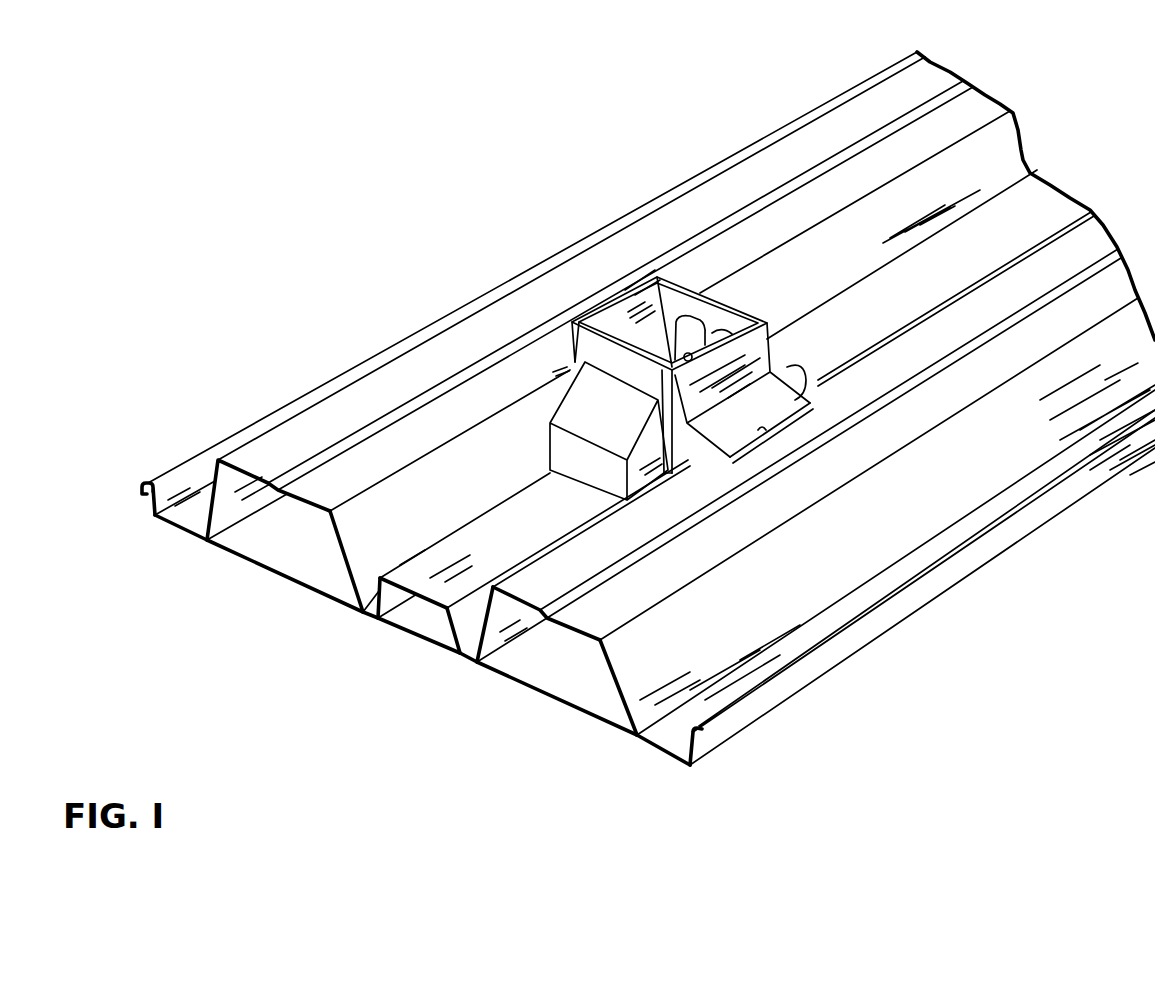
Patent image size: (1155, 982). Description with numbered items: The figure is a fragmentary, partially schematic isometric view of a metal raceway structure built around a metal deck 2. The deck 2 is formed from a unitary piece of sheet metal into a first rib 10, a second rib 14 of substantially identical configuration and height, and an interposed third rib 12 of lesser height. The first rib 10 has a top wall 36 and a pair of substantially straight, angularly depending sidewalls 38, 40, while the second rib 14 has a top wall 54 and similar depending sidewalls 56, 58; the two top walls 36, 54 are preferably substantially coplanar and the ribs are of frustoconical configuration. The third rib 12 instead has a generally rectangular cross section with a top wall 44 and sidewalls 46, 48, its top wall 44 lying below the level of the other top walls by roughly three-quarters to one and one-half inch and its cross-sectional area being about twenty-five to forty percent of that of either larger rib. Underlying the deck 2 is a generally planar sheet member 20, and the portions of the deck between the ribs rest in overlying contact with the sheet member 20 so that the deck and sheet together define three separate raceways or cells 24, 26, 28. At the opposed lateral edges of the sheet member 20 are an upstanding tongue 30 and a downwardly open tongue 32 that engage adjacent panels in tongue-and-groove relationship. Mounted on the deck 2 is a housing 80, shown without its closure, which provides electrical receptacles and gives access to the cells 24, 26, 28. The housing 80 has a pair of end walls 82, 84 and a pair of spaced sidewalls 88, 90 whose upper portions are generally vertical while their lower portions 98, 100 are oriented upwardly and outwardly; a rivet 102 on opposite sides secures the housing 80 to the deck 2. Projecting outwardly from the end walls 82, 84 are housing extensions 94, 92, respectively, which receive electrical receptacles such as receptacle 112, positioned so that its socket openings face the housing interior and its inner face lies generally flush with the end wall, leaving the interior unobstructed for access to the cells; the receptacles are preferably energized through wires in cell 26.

The metal deck 2 is at (350, 376).
The first rib 10 is at (421, 365).
The third rib 12 is at (432, 564).
The second rib 14 is at (600, 601).
The sheet member 20 is at (599, 731).
The cell 24 is at (265, 552).
The cell 26 is at (432, 640).
The cell 28 is at (517, 672).
The upstanding tongue 30 is at (712, 748).
The downwardly open tongue 32 is at (150, 492).
The top wall 36 is at (405, 400).
The sidewall 38 is at (213, 545).
The sidewall 40 is at (358, 603).
The top wall 44 is at (526, 543).
The sidewall 46 is at (417, 630).
The sidewall 48 is at (467, 640).
The top wall 54 is at (688, 583).
The sidewall 56 is at (524, 636).
The sidewall 58 is at (650, 705).
The housing 80 is at (693, 359).
The end wall 82 is at (684, 297).
The end wall 84 is at (575, 345).
The sidewall 88 is at (608, 322).
The sidewall 90 is at (770, 340).
The housing extension 94 is at (800, 372).
The lower portion 98 is at (688, 462).
The lower portion 100 is at (556, 378).
The rivet 102 is at (760, 427).
The receptacle 112 is at (703, 327).
The housing extension 92 is at (597, 478).